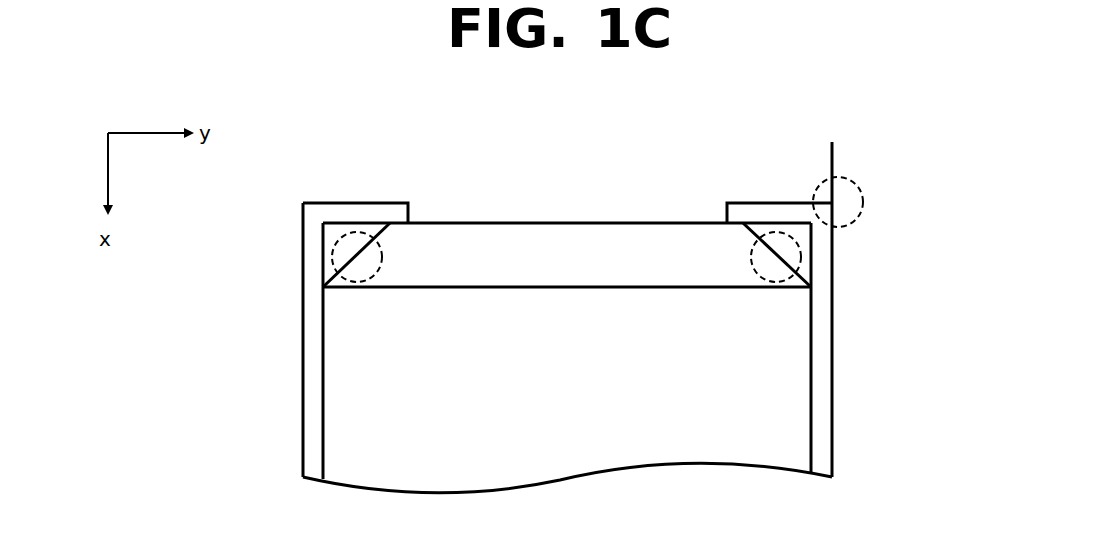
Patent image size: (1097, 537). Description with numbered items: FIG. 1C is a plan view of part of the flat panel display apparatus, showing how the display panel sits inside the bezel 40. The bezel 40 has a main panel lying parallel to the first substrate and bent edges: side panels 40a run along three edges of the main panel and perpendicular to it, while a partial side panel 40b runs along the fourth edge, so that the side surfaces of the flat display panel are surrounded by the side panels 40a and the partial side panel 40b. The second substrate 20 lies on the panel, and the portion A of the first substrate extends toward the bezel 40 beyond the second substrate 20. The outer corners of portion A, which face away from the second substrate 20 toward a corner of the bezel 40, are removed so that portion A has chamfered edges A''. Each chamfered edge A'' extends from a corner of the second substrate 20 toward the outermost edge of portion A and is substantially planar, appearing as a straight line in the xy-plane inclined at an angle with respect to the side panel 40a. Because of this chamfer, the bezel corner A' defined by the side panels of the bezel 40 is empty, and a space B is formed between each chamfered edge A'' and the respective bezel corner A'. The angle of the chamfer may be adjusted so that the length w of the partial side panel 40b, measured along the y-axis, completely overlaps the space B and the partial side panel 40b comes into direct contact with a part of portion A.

The second substrate 20 is at (778, 355).
The bezel 40 is at (822, 406).
The side panel 40a is at (325, 262).
The partial side panel 40b is at (323, 203).
The portion A is at (567, 207).
The bezel corner A' is at (873, 202).
The chamfered edge A'' is at (635, 211).
The space B is at (805, 243).
The length of the partial side panel w is at (727, 203).